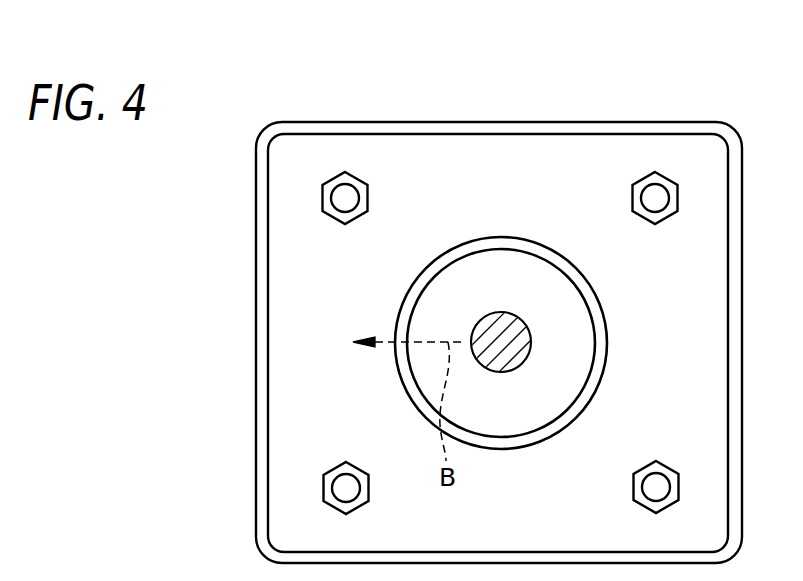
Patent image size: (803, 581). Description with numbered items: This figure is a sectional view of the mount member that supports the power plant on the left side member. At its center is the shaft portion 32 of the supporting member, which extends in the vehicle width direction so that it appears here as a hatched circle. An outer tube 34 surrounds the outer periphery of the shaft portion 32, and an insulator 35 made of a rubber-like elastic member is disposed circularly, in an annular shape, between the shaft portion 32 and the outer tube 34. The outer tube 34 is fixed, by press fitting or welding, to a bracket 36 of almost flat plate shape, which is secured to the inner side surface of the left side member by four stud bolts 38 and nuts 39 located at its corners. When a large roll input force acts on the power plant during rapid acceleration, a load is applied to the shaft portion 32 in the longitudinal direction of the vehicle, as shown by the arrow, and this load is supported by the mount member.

The shaft portion 32 is at (514, 324).
The outer tube 34 is at (501, 237).
The insulator 35 is at (448, 276).
The bracket 36 is at (660, 122).
The stud bolt 38 is at (359, 199).
The nut 39 is at (357, 222).